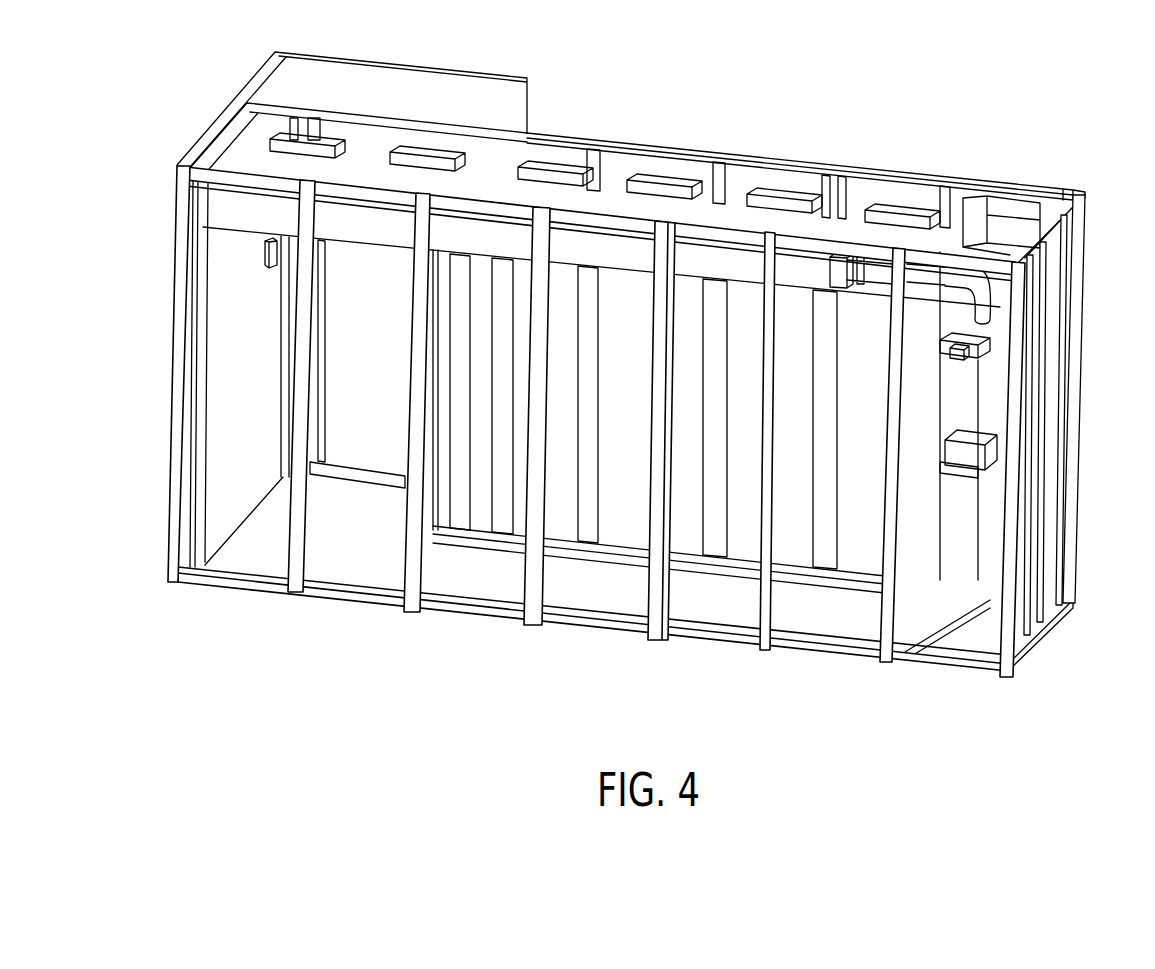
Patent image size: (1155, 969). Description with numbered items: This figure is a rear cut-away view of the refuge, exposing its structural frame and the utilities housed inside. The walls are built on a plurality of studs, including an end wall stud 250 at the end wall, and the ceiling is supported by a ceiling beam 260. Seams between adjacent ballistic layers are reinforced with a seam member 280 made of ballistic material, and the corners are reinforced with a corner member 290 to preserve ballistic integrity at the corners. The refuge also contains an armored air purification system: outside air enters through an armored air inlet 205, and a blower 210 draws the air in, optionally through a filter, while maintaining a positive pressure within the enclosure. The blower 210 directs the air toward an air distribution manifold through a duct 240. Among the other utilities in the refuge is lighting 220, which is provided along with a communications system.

The armored air inlet 205 is at (1007, 217).
The blower 210 is at (880, 277).
The lighting 220 is at (902, 205).
The duct 240 is at (851, 274).
The end wall stud 250 is at (1062, 600).
The ceiling beam 260 is at (797, 167).
The seam member 280 is at (886, 666).
The corner member 290 is at (1007, 679).